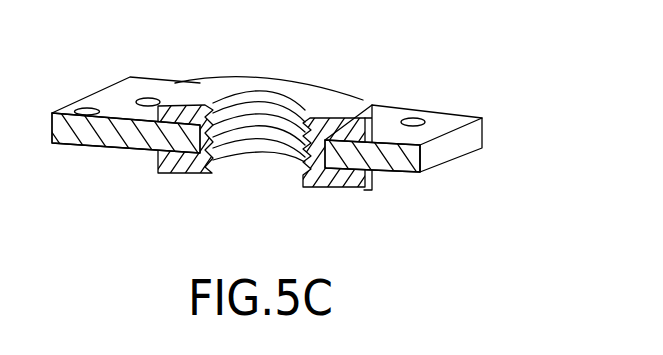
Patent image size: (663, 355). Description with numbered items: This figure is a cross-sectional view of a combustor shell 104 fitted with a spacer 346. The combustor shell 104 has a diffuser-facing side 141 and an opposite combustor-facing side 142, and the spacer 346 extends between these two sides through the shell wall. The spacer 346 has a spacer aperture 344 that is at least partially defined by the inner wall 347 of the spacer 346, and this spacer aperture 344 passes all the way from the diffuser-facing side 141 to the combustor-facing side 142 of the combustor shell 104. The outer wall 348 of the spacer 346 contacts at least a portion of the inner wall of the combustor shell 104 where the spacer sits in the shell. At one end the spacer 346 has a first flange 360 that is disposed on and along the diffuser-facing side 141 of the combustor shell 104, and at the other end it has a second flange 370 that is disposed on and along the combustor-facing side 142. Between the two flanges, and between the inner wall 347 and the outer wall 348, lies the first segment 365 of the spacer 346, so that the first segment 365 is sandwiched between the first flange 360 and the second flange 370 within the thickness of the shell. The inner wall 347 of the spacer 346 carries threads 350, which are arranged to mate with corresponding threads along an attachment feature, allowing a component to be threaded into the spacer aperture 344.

The combustor shell 104 is at (482, 130).
The diffuser-facing side 141 is at (462, 119).
The combustor-facing side 142 is at (465, 155).
The spacer aperture 344 is at (230, 186).
The spacer 346 is at (363, 185).
The inner wall 347 is at (205, 112).
The outer wall 348 is at (337, 142).
The threads 350 is at (302, 162).
The first flange 360 is at (357, 116).
The first segment 365 is at (197, 132).
The second flange 370 is at (183, 173).